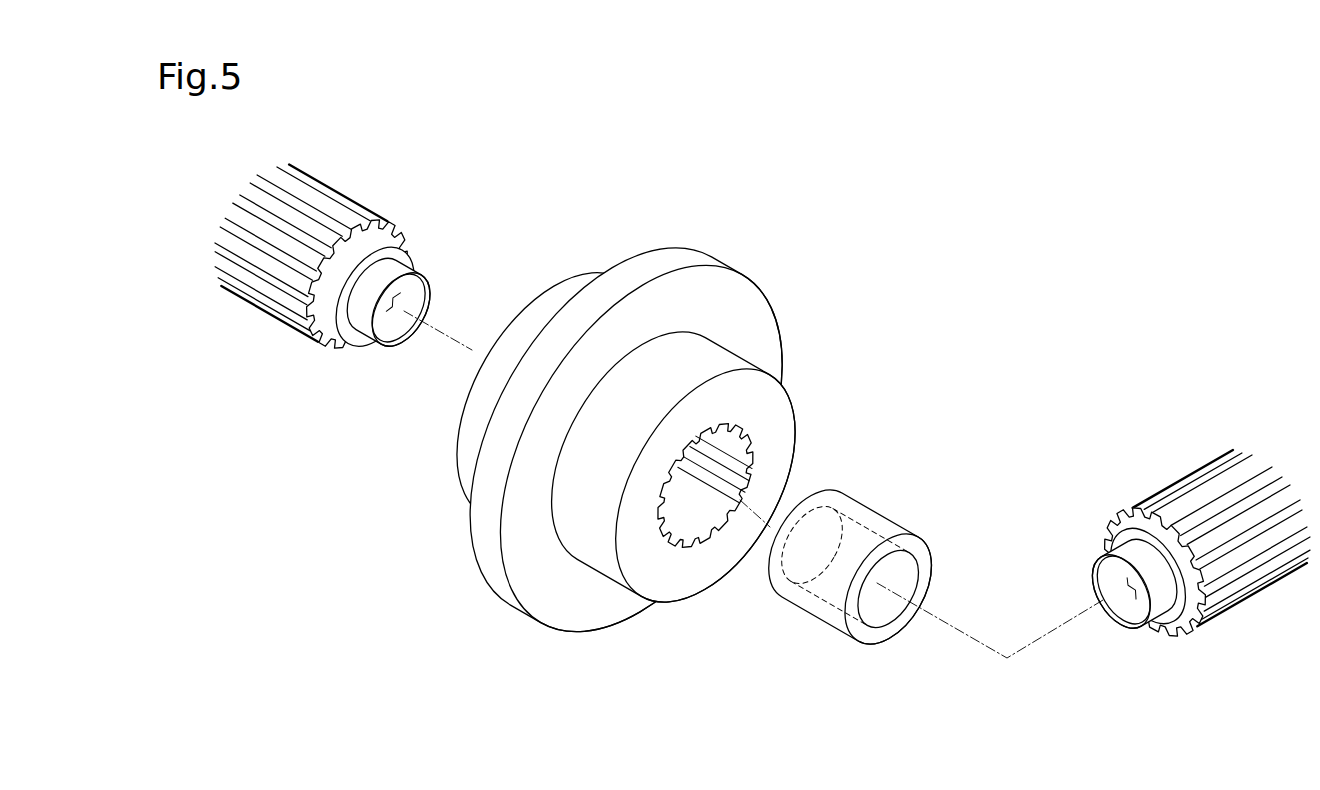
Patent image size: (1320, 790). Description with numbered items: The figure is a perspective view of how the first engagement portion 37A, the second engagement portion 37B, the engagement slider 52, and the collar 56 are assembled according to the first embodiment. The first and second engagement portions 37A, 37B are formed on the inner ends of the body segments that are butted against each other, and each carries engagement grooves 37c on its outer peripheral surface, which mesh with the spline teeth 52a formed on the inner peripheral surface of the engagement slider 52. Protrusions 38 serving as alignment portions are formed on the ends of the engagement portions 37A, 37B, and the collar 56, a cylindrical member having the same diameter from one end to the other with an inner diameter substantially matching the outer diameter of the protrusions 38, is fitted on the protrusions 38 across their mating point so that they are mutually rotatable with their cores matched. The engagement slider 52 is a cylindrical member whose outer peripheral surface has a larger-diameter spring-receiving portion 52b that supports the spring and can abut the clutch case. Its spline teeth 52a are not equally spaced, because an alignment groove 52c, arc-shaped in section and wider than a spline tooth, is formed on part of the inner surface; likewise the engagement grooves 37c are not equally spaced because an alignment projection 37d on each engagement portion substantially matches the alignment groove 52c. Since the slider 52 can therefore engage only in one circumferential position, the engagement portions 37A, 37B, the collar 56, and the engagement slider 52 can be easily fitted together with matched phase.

The first engagement portion 37A is at (381, 231).
The second engagement portion 37B is at (1173, 510).
The engagement grooves 37c is at (310, 205).
The alignment projection 37d is at (347, 347).
The protrusions 38 is at (386, 270).
The engagement slider 52 is at (660, 436).
The spline teeth 52a is at (740, 473).
The spring-receiving portion 52b is at (667, 262).
The alignment groove 52c is at (695, 572).
The collar 56 is at (807, 613).